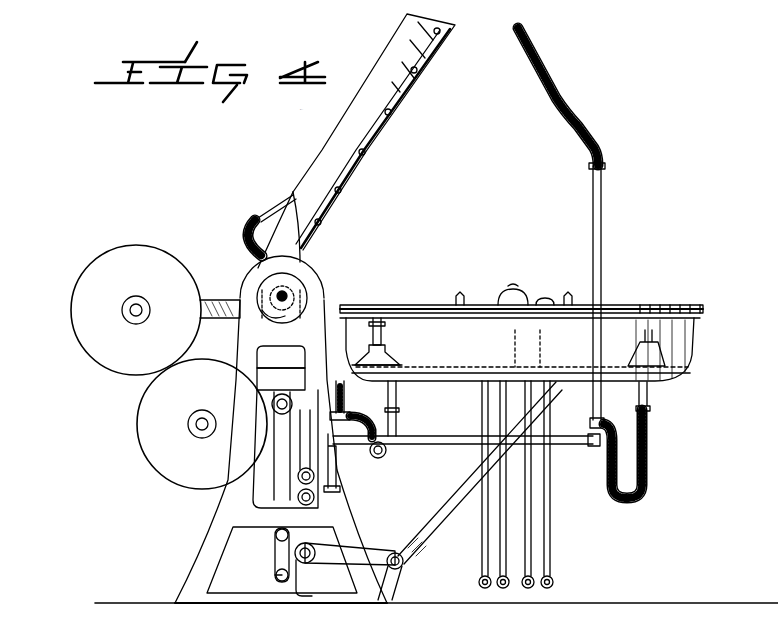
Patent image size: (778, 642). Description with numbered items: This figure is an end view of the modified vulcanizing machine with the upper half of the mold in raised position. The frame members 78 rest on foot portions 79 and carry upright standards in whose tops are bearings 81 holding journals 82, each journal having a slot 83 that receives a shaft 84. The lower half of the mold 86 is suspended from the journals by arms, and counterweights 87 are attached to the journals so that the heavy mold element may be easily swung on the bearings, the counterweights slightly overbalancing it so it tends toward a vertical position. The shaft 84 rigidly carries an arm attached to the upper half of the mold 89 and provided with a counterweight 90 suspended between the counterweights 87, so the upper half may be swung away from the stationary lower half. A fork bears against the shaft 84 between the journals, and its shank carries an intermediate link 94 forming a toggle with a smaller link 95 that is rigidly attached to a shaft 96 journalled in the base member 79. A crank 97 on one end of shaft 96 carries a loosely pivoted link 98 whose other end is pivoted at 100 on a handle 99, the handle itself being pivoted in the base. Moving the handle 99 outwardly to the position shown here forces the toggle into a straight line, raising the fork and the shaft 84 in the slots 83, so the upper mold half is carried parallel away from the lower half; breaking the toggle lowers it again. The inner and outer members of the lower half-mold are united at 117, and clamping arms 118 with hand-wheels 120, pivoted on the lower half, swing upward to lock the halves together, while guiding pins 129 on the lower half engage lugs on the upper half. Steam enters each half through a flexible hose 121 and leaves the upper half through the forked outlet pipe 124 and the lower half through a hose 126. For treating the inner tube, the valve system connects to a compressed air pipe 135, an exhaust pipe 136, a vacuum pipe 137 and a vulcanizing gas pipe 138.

The frame members 78 is at (340, 503).
The foot portions 79 is at (197, 578).
The bearings 81 is at (262, 290).
The journals 82 is at (292, 290).
The slots 83 is at (300, 304).
The shaft 84 is at (262, 307).
The lower half of the mold 86 is at (446, 392).
The counterweights 87 is at (85, 330).
The upper half of the mold 89 is at (332, 143).
The counterweight 90 is at (158, 447).
The intermediate link 94 is at (282, 478).
The smaller link 95 is at (275, 552).
The shaft 96 is at (280, 582).
The crank 97 is at (304, 562).
The link 98 is at (332, 552).
The handle 99 is at (440, 514).
The pivot 100 is at (404, 566).
The union of inner and outer members 117 is at (697, 316).
The clamping arms 118 is at (390, 335).
The hand-wheels 120 is at (398, 360).
The flexible hose 121 is at (568, 108).
The outlet pipe 124 is at (248, 226).
The hose 126 is at (386, 454).
The guiding pins 129 is at (463, 296).
The pipe 135 is at (500, 587).
The exhaust pipe 136 is at (480, 582).
The vacuum pipe 137 is at (532, 587).
The pipe 138 is at (547, 587).